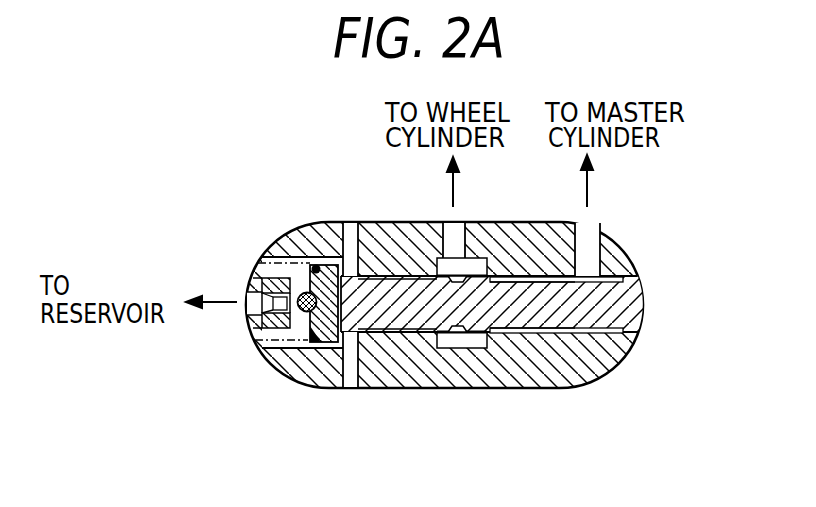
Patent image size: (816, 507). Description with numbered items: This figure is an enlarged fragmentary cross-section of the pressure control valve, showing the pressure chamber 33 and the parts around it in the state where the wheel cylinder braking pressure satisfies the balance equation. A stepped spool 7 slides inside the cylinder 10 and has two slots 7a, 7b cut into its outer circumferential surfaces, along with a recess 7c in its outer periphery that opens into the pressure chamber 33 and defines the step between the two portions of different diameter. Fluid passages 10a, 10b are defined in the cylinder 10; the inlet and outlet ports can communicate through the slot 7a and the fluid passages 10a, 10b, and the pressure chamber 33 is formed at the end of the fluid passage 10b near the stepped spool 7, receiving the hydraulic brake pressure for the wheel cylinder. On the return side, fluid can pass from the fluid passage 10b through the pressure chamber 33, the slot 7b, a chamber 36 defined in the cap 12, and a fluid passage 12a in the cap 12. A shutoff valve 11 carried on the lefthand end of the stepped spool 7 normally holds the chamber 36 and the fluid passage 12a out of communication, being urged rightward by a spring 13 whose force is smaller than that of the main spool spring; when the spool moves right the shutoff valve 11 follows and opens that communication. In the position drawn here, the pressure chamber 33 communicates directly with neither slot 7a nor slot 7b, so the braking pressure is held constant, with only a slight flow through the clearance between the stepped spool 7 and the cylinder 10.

The stepped spool 7 is at (630, 292).
The slot 7a is at (543, 223).
The slot 7b is at (383, 252).
The recess 7c is at (497, 223).
The cylinder 10 is at (597, 368).
The fluid passage 10a is at (593, 227).
The fluid passage 10b is at (460, 223).
The shutoff valve 11 is at (318, 262).
The cap 12 is at (254, 339).
The fluid passage 12a is at (252, 278).
The spring 13 is at (278, 357).
The pressure chamber 33 is at (422, 223).
The chamber 36 is at (353, 242).